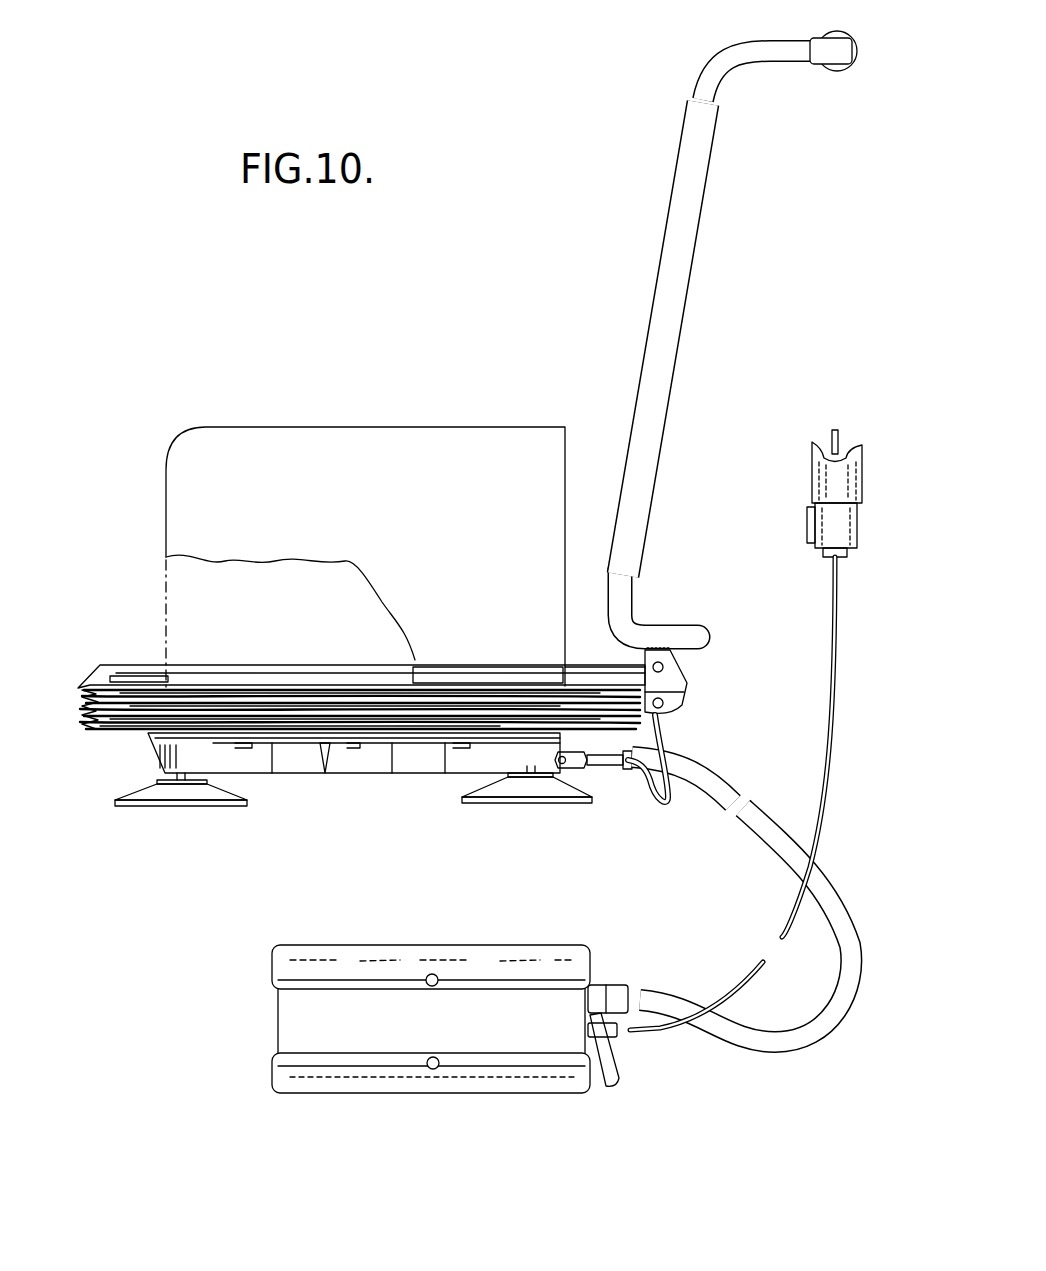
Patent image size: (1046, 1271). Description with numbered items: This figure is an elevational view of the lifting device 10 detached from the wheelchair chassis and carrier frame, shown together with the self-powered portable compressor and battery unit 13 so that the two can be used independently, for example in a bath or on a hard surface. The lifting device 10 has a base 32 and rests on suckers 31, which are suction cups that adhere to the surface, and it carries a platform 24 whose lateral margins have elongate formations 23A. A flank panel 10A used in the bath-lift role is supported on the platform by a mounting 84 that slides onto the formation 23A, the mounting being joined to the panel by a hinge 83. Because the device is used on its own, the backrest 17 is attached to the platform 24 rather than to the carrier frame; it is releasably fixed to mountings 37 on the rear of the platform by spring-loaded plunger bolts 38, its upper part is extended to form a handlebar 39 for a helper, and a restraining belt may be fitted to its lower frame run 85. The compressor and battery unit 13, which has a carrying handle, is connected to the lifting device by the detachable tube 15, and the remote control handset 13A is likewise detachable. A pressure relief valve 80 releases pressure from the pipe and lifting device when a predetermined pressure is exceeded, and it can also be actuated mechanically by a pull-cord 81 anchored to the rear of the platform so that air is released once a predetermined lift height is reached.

The lifting device 10 is at (112, 732).
The flank panel 10A is at (380, 474).
The compressor and battery unit 13 is at (460, 979).
The control handset 13A is at (840, 482).
The tube 15 is at (782, 852).
The backrest 17 is at (634, 447).
The elongate formation 23A is at (238, 685).
The platform 24 is at (330, 681).
The sucker 31 is at (192, 795).
The base 32 is at (360, 758).
The mounting 37 is at (672, 690).
The spring-loaded plunger bolt 38 is at (678, 712).
The handlebar 39 is at (826, 72).
The pressure relief valve 80 is at (552, 770).
The pull-cord 81 is at (661, 748).
The hinge 83 is at (435, 681).
The mounting 84 is at (490, 683).
The lower frame run 85 is at (692, 636).